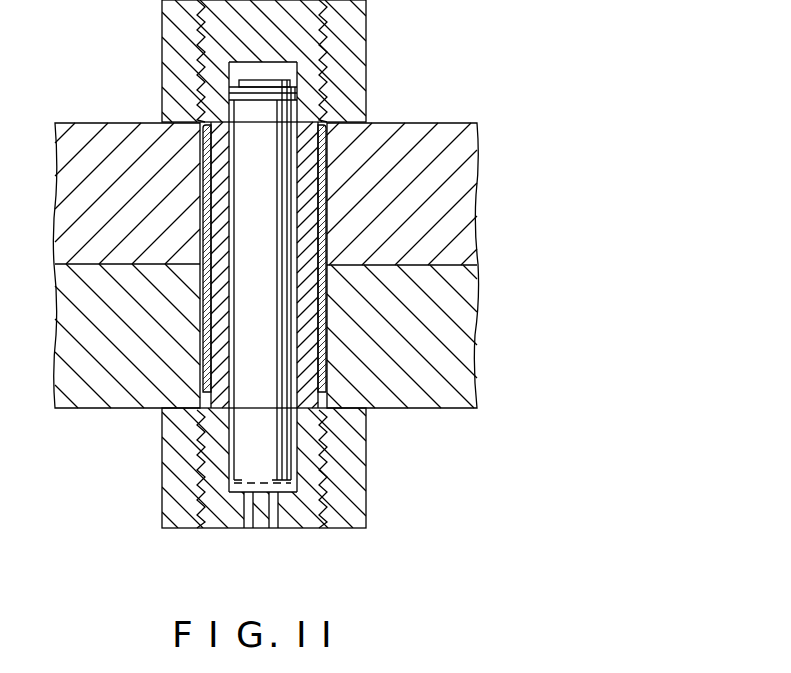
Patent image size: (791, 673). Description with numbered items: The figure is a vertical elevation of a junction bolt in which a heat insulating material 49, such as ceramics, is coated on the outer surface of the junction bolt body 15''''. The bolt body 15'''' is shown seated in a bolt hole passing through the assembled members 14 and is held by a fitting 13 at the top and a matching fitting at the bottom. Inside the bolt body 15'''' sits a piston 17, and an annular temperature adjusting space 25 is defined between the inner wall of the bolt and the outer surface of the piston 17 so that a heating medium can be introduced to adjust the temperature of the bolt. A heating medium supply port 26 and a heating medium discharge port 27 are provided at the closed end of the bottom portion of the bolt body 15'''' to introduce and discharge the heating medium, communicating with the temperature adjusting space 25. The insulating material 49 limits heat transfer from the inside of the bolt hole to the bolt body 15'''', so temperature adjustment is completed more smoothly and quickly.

The upper nut fitting 13 is at (358, 33).
The wall plates 14 is at (450, 135).
The junction bolt body 15'''' is at (309, 265).
The heat insulating material 49 is at (323, 168).
The temperature adjusting space 25 is at (290, 347).
The piston 17 is at (283, 454).
The heating medium supply port 26 is at (246, 528).
The heating medium discharge port 27 is at (277, 528).